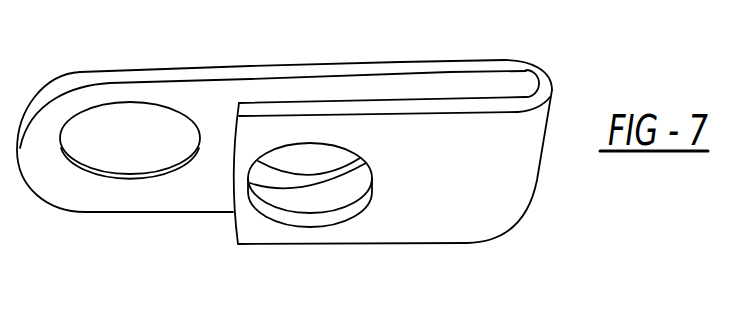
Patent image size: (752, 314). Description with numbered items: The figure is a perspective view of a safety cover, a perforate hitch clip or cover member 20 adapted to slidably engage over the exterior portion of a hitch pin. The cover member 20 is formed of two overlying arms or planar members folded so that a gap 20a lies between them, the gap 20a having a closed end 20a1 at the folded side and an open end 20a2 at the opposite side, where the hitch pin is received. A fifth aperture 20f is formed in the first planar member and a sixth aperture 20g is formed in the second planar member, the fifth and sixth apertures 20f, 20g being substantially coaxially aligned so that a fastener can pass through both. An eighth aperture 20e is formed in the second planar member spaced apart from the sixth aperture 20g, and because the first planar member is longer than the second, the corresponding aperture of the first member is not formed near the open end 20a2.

The cover member 20 is at (374, 60).
The gap 20a is at (500, 88).
The closed end 20a1 is at (537, 177).
The open end 20a2 is at (232, 178).
The eighth aperture 20e is at (96, 183).
The fifth aperture 20f is at (315, 223).
The sixth aperture 20g is at (322, 178).